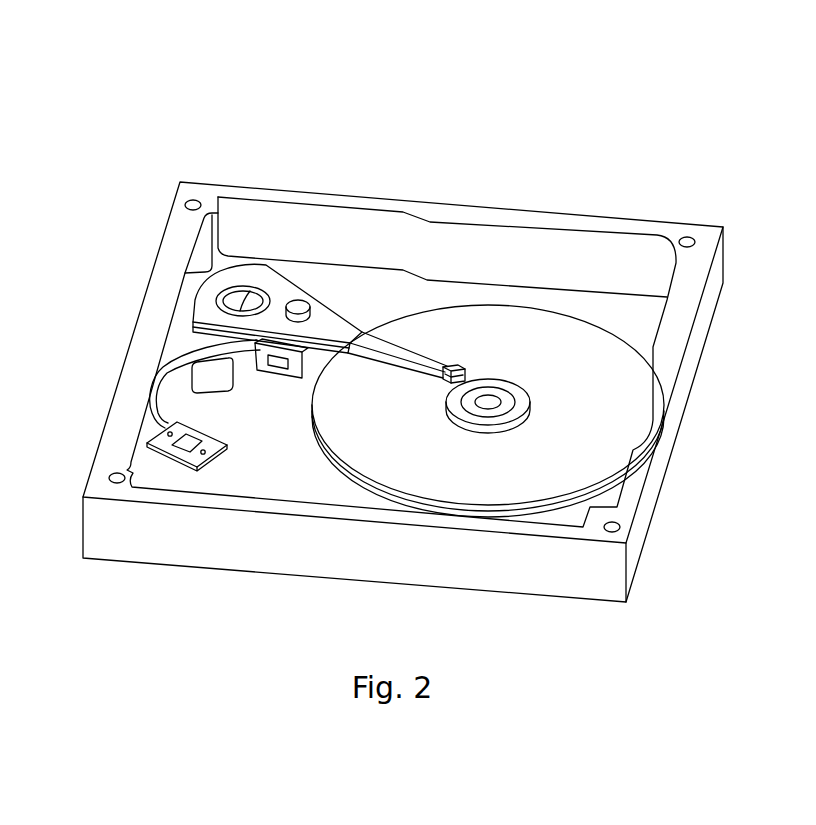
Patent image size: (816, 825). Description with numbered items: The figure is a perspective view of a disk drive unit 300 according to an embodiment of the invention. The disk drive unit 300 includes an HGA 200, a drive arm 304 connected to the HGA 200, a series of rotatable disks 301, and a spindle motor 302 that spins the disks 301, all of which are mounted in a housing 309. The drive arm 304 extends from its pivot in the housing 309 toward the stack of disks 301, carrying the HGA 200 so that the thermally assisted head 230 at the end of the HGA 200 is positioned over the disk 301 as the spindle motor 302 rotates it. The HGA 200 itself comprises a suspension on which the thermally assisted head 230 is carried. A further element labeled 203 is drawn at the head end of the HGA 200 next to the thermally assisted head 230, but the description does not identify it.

The disk drive unit 300 is at (34, 43).
The housing 309 is at (653, 267).
The rotatable disks 301 is at (567, 343).
The spindle motor 302 is at (488, 400).
The drive arm 304 is at (325, 315).
The HGA 200 is at (390, 350).
The thermally assisted head 230 is at (450, 368).
The magnetic head 203 is at (455, 370).